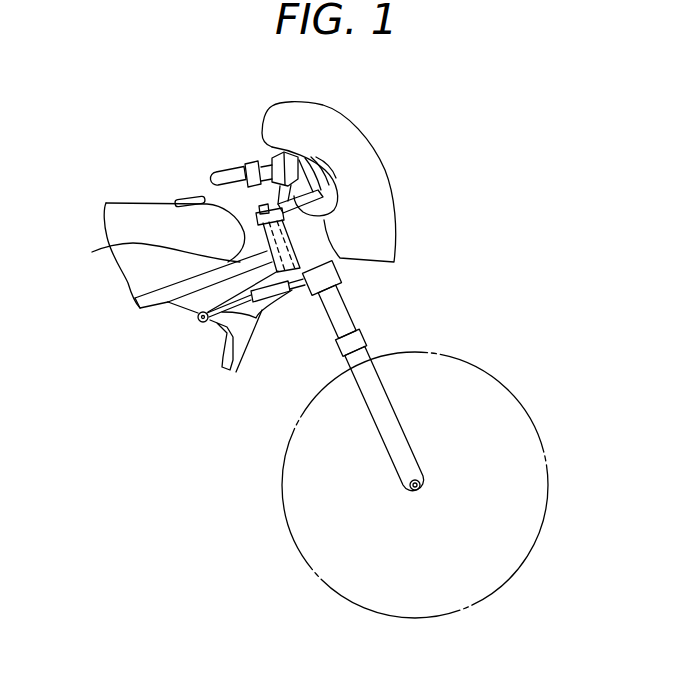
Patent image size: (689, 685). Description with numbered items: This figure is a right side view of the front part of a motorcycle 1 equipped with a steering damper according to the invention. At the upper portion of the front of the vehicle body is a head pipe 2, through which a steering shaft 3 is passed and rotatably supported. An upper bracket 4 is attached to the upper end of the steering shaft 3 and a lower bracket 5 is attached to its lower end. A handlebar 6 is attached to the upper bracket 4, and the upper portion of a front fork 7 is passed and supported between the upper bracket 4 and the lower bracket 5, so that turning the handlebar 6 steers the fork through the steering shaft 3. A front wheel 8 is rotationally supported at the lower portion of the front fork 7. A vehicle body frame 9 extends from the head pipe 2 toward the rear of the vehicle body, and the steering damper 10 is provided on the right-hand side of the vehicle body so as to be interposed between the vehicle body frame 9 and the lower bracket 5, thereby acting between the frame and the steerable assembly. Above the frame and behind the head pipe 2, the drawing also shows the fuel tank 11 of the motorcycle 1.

The motorcycle 1 is at (508, 152).
The head pipe 2 is at (182, 305).
The steering shaft 3 is at (307, 257).
The upper bracket 4 is at (300, 195).
The lower bracket 5 is at (315, 297).
The handlebar 6 is at (223, 167).
The front fork 7 is at (393, 417).
The front wheel 8 is at (282, 487).
The vehicle body frame 9 is at (162, 302).
The steering damper 10 is at (275, 303).
The fuel tank 11 is at (138, 203).